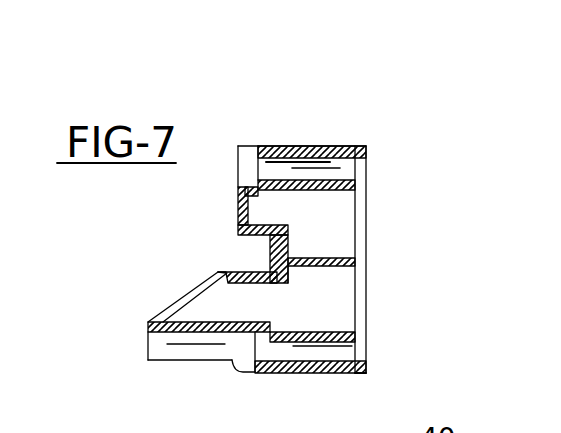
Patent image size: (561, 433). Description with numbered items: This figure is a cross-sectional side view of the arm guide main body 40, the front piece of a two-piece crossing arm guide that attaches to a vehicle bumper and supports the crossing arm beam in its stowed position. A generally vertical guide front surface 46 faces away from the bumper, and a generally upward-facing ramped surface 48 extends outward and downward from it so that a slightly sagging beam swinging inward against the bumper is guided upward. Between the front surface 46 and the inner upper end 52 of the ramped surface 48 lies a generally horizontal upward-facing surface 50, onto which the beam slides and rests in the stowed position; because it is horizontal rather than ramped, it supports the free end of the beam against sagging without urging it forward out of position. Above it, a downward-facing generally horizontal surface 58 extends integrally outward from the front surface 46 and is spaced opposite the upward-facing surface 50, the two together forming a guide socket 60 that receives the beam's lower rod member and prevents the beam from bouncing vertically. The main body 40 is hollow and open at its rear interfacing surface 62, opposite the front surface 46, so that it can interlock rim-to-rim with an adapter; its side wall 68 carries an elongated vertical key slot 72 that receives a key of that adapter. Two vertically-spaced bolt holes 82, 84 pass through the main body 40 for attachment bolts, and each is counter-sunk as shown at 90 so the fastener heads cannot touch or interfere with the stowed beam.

The arm guide main body 40 is at (295, 140).
The guide front surface 46 is at (288, 231).
The ramped surface 48 is at (215, 277).
The upward-facing surface 50 is at (225, 233).
The inner upper end 52 is at (217, 268).
The downward-facing horizontal surface 58 is at (258, 241).
The guide socket 60 is at (252, 284).
The interfacing surface 62 is at (366, 372).
The side wall 68 is at (320, 303).
The key slot 72 is at (360, 265).
The bolt hole 82 is at (362, 146).
The bolt hole 84 is at (315, 350).
The counter-sink 90 is at (258, 146).